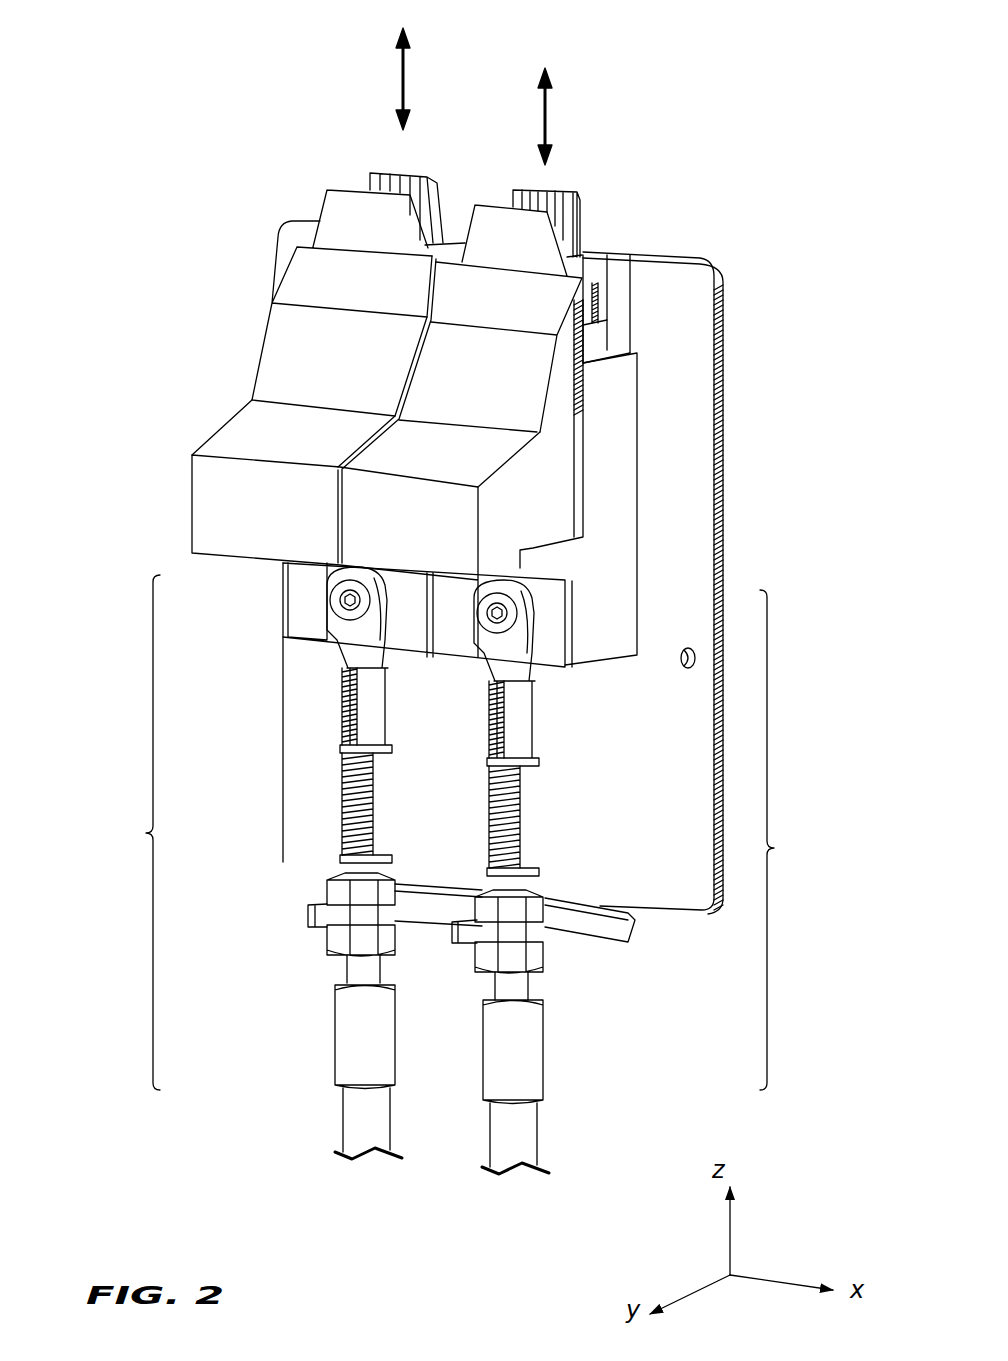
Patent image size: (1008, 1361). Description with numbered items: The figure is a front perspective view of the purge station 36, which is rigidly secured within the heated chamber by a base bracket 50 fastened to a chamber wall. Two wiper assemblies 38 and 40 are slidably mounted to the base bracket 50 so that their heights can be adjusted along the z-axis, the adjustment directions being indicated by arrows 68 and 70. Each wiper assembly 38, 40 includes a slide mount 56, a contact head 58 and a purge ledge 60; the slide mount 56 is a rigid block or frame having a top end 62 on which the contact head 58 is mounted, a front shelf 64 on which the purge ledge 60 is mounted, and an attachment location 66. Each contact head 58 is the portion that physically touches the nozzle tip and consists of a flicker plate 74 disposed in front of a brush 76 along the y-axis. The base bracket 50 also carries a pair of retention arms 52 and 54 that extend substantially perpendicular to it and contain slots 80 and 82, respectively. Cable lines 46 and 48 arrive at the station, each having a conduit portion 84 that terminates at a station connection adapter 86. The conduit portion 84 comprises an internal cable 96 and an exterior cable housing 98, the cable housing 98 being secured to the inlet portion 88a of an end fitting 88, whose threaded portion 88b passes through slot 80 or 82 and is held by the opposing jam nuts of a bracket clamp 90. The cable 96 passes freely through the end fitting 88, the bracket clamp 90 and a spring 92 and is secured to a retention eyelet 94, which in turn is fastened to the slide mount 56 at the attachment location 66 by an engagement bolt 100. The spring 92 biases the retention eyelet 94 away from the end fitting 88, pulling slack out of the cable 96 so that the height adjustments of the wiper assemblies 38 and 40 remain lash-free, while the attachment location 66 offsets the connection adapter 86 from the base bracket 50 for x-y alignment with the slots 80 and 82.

The purge station 36 is at (195, 65).
The wiper assembly 38 is at (455, 85).
The wiper assembly 40 is at (650, 100).
The cable line 46 is at (180, 1140).
The cable line 48 is at (722, 1094).
The base bracket 50 is at (722, 520).
The retention arm 52 is at (327, 898).
The retention arm 54 is at (603, 922).
The slide mount 56 is at (650, 450).
The contact head 58 is at (305, 184).
The purge ledge 60 is at (233, 420).
The top end 62 is at (617, 350).
The front shelf 64 is at (560, 562).
The attachment location 66 is at (335, 652).
The arrow 68 is at (398, 75).
The arrow 70 is at (548, 128).
The flicker plate 74 is at (342, 199).
The brush 76 is at (433, 247).
The slot 80 is at (332, 928).
The slot 82 is at (487, 943).
The conduit portion 84 is at (363, 1170).
The station connection adapter 86 is at (462, 832).
The end fitting 88 is at (318, 1018).
The inlet portion 88a is at (348, 1047).
The threaded portion 88b is at (343, 862).
The bracket clamp 90 is at (393, 885).
The spring 92 is at (335, 776).
The retention eyelet 94 is at (377, 699).
The cable 96 is at (352, 683).
The cable housing 98 is at (348, 1120).
The engagement bolt 100 is at (492, 592).